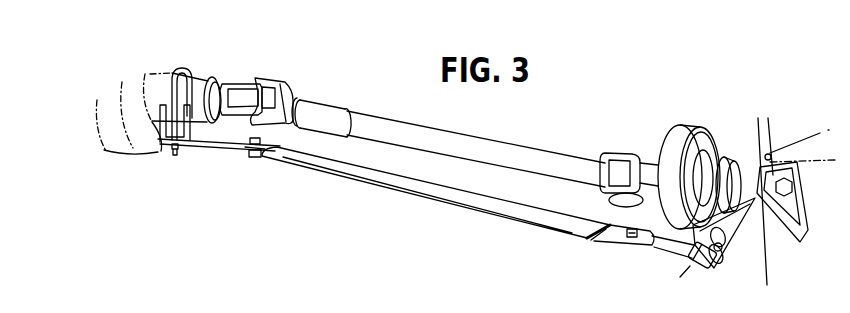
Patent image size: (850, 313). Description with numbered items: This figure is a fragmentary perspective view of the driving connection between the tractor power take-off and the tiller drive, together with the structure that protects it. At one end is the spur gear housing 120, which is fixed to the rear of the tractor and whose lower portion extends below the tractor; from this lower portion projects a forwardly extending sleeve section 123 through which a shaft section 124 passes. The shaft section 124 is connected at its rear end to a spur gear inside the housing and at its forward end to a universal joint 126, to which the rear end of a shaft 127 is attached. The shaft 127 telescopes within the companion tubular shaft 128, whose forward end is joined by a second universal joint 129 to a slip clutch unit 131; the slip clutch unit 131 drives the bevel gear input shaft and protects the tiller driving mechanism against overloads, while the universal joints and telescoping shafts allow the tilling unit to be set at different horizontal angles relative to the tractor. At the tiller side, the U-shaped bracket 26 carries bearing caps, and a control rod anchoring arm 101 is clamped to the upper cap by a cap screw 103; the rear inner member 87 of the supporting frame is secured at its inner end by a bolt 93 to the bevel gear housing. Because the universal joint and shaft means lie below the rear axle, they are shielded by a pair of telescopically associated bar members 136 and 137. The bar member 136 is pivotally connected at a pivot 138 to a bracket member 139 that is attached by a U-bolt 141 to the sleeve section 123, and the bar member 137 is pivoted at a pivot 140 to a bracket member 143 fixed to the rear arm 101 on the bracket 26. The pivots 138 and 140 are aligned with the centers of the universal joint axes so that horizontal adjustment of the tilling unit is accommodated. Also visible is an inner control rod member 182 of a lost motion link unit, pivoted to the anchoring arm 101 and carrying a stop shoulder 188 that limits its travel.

The spur gear housing 120 is at (112, 154).
The U-bolt 141 is at (180, 69).
The sleeve section 123 is at (196, 79).
The shaft section 124 is at (224, 89).
The universal joint 126 is at (281, 80).
The shaft 127 is at (333, 105).
The tubular shaft 128 is at (489, 135).
The second universal joint 129 is at (642, 149).
The slip clutch unit 131 is at (706, 123).
The control rod anchoring arm 101 is at (707, 203).
The U-shaped bracket 26 is at (757, 130).
The cap screw 103 is at (768, 155).
The bolt 93 is at (794, 188).
The bracket member 139 is at (221, 144).
The pivot 138 is at (256, 160).
The bar member 136 is at (478, 207).
The bar member 137 is at (603, 243).
The pivot 140 is at (627, 247).
The bracket member 143 is at (662, 251).
The control rod member 182 is at (698, 281).
The stop shoulder 188 is at (712, 266).
The rear inner member 87 is at (762, 228).